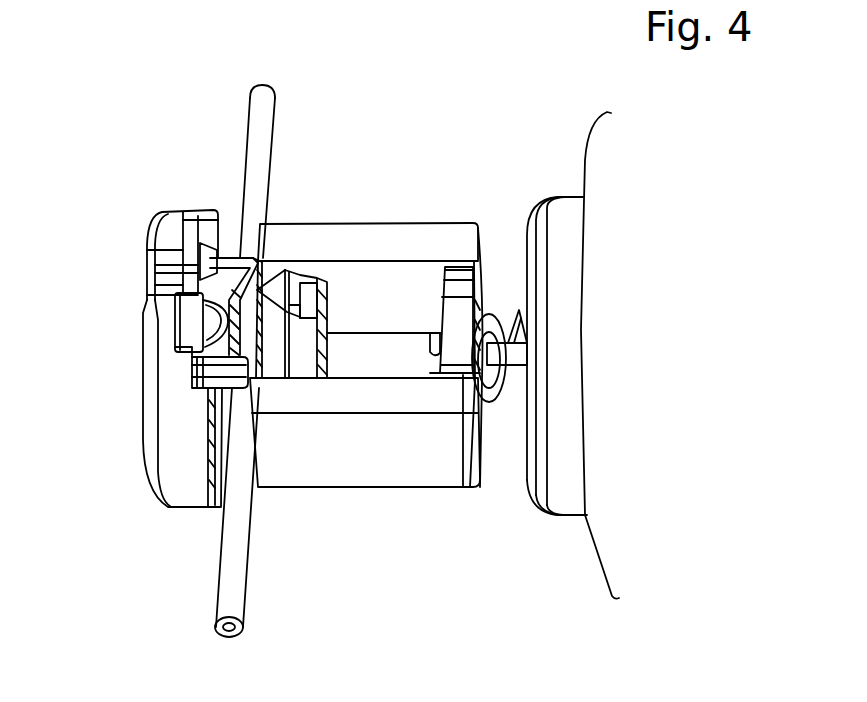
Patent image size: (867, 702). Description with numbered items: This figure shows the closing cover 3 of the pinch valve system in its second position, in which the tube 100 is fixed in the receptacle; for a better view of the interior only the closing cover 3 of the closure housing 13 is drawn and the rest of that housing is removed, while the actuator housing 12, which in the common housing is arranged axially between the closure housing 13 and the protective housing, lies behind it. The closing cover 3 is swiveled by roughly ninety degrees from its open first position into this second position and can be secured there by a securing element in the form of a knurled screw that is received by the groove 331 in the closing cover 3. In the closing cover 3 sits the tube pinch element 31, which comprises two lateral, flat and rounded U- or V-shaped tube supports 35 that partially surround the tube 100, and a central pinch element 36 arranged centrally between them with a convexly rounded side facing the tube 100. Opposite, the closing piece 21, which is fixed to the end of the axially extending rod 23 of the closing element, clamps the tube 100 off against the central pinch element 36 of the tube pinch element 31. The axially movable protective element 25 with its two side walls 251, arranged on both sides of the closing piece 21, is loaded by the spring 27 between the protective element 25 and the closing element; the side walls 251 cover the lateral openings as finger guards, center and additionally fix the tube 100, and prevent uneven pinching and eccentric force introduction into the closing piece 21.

The closing cover 3 is at (173, 372).
The actuator housing 12 is at (573, 500).
The closure housing 13 is at (509, 136).
The closing piece 21 is at (305, 352).
The rod 23 is at (468, 265).
The protective element 25 is at (366, 356).
The spring 27 is at (514, 305).
The tube pinch element 31 is at (215, 390).
The lateral tube supports 35 is at (233, 258).
The central pinch element 36 is at (214, 331).
The tube 100 is at (233, 525).
The side walls 251 is at (315, 240).
The groove 331 is at (150, 262).